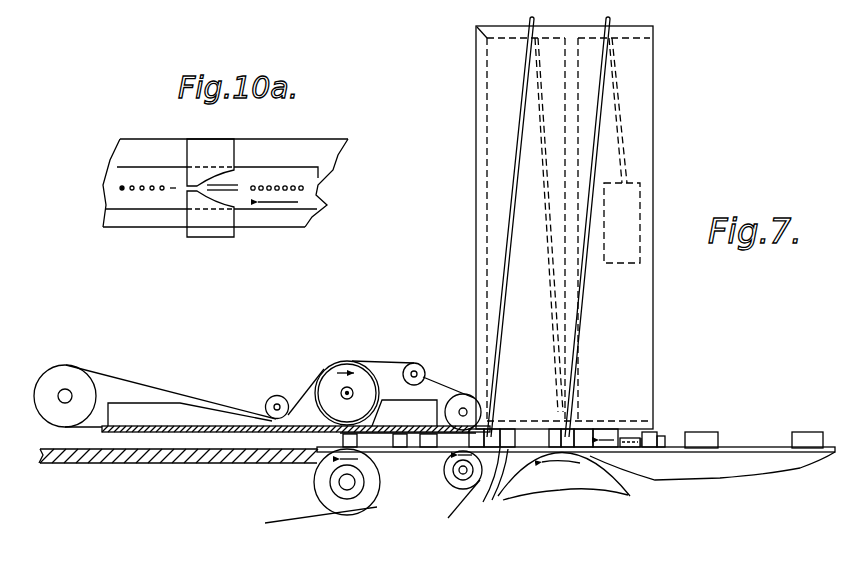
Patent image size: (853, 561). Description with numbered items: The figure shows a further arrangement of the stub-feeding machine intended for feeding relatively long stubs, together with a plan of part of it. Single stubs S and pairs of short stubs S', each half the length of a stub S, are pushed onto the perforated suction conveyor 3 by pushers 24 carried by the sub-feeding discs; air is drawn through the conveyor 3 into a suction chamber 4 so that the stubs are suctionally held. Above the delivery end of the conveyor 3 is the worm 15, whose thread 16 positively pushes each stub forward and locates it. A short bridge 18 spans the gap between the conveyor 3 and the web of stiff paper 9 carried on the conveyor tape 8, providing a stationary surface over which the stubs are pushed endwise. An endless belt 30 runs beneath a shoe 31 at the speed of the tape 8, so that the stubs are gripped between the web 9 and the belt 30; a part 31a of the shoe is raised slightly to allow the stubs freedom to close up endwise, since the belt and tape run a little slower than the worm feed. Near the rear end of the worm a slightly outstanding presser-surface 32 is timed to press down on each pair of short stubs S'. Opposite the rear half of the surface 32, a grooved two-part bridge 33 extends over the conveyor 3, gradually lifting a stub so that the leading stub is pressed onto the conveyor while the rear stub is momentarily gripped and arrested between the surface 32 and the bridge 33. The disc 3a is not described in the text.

In FIG. 10A, the perforated conveyor 3 is at (307, 176).
In FIG. 7, the perforated conveyor 3 is at (763, 448).
In FIG. 7, the disc 3a is at (593, 490).
In FIG. 7, the suction chamber 4 is at (743, 468).
In FIG. 7, the conveyor tape 8 is at (284, 519).
In FIG. 7, the web of stiff paper 9 is at (447, 514).
In FIG. 7, the worm 15 is at (636, 353).
In FIG. 7, the thread 16 is at (573, 382).
In FIG. 7, the bridge 18 is at (503, 500).
In FIG. 7, the pusher 24 is at (662, 437).
In FIG. 7, the endless belt 30 is at (187, 393).
In FIG. 7, the shoe 31 is at (202, 423).
In FIG. 7, the raised part of shoe 31a is at (404, 413).
In FIG. 7, the presser-surface 32 is at (636, 264).
In FIG. 10A, the bridge 33 is at (218, 154).
In FIG. 7, the bridge 33 is at (633, 453).
In FIG. 7, the single stub S is at (714, 434).
In FIG. 7, the short stub S' is at (654, 417).